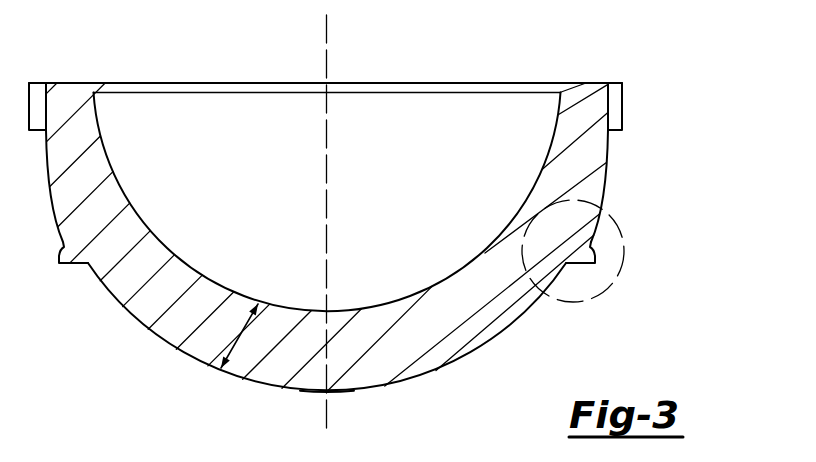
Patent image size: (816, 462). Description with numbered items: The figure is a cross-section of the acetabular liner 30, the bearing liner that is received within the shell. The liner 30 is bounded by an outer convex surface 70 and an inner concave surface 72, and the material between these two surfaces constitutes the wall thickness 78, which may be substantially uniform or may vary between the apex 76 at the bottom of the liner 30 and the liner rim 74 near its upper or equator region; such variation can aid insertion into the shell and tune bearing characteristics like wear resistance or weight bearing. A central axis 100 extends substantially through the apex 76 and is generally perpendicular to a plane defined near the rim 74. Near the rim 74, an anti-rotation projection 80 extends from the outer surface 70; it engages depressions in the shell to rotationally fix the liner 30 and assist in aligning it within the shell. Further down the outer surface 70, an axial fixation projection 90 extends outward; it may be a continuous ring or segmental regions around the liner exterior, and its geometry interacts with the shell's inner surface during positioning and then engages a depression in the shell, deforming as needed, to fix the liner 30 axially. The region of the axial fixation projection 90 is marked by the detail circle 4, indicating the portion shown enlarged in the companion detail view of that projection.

The acetabular liner 30 is at (373, 223).
The outer convex surface 70 is at (416, 380).
The inner concave surface 72 is at (384, 302).
The liner rim 74 is at (47, 83).
The apex 76 is at (327, 392).
The wall thickness 78 is at (238, 330).
The anti-rotation projection 80 is at (618, 118).
The axial fixation projection 90 is at (585, 269).
The central axis 100 is at (326, 60).
The detail view circle (FIG. 4) 4 is at (622, 231).